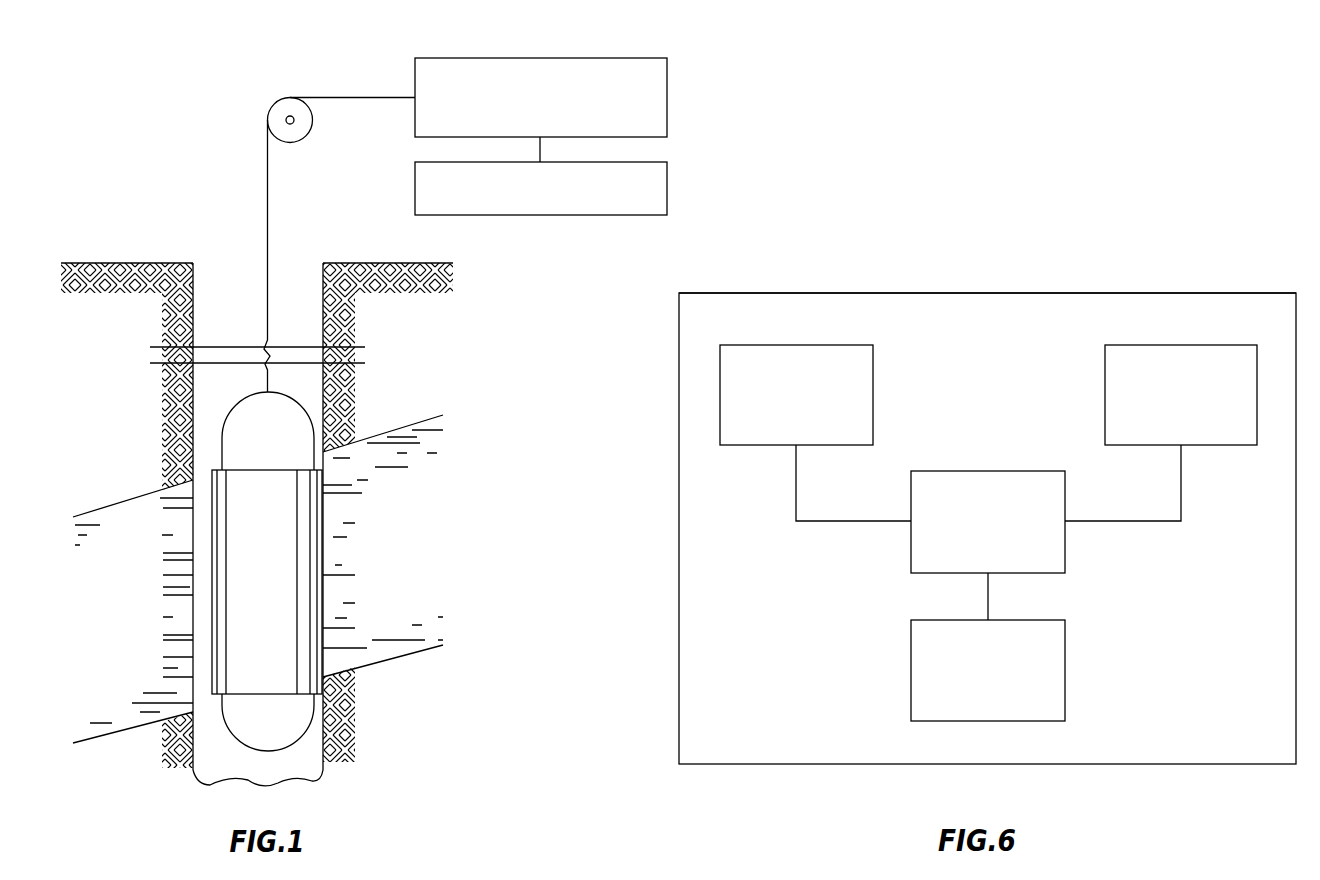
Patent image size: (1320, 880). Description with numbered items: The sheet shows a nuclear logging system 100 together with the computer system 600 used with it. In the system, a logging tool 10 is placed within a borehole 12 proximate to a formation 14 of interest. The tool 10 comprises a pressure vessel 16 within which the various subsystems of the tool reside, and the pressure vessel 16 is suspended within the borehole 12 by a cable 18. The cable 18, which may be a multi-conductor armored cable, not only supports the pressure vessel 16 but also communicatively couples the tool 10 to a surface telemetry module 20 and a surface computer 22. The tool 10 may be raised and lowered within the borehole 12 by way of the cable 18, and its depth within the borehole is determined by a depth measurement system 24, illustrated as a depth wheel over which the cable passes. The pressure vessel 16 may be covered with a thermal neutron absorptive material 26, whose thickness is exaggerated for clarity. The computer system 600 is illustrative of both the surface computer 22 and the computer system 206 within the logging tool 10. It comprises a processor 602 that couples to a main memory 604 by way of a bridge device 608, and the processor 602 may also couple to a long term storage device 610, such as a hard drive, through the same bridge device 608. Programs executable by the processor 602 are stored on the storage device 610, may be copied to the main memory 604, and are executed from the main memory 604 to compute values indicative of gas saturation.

In FIG. 1, the nuclear logging system 100 is at (150, 150).
In FIG. 1, the logging tool 10 is at (219, 560).
In FIG. 1, the borehole 12 is at (218, 302).
In FIG. 1, the formation 14 is at (385, 550).
In FIG. 1, the pressure vessel 16 is at (255, 449).
In FIG. 1, the cable 18 is at (268, 202).
In FIG. 1, the surface telemetry module 20 is at (667, 87).
In FIG. 1, the surface computer 22 is at (667, 190).
In FIG. 6, the surface computer 22 is at (1233, 293).
In FIG. 1, the depth measurement system 24 is at (307, 137).
In FIG. 1, the thermal neutron absorptive material 26 is at (267, 682).
In FIG. 6, the computer system 600 is at (987, 467).
In FIG. 6, the computer system 206 is at (1170, 293).
In FIG. 6, the processor 602 is at (873, 372).
In FIG. 6, the main memory 604 is at (1105, 380).
In FIG. 6, the bridge device 608 is at (1065, 548).
In FIG. 6, the long term storage device 610 is at (1065, 629).